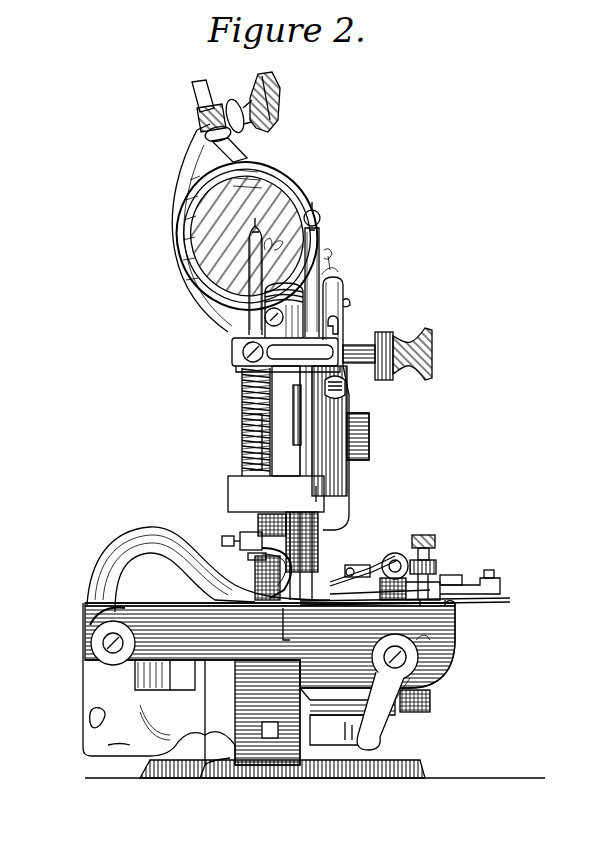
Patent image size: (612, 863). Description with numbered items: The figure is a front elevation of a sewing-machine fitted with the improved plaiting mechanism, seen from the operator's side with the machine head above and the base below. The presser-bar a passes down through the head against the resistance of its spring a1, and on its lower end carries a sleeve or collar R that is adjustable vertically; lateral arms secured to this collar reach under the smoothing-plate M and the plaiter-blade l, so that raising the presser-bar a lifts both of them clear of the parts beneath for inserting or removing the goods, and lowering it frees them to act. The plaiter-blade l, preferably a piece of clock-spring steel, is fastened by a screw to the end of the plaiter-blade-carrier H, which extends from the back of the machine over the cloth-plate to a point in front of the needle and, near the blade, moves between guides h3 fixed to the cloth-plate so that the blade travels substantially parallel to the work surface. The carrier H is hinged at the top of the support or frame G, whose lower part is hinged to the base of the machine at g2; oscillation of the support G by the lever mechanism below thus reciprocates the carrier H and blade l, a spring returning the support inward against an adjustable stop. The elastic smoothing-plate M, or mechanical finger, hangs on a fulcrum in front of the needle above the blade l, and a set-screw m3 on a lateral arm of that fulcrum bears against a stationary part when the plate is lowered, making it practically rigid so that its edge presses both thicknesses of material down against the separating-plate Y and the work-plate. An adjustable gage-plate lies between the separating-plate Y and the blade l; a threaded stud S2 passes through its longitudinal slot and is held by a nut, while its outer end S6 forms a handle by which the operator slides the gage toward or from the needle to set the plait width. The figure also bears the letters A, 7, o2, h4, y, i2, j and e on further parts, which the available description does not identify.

The frame / standard A is at (352, 313).
The presser-bar spring a1 is at (243, 422).
The presser-bar a is at (249, 442).
The plaiter-blade-carrier H is at (208, 569).
The sleeve or collar R is at (242, 541).
The smoothing-plate M is at (355, 559).
The plaiter-blade l is at (373, 556).
The pivot o2 is at (345, 566).
The set-screw m3 is at (432, 560).
The stud S2 is at (452, 574).
The block 7 is at (450, 582).
The outer end of gage-plate S6 is at (478, 580).
The separating-plate Y is at (411, 603).
The guides h3 is at (426, 609).
The bar part h4 is at (448, 609).
The base slab y is at (283, 626).
The carrier-support frame G is at (144, 719).
The hinge of carrier-support g2 is at (94, 721).
The lug i2 is at (119, 736).
The block j is at (270, 731).
The block e is at (347, 716).